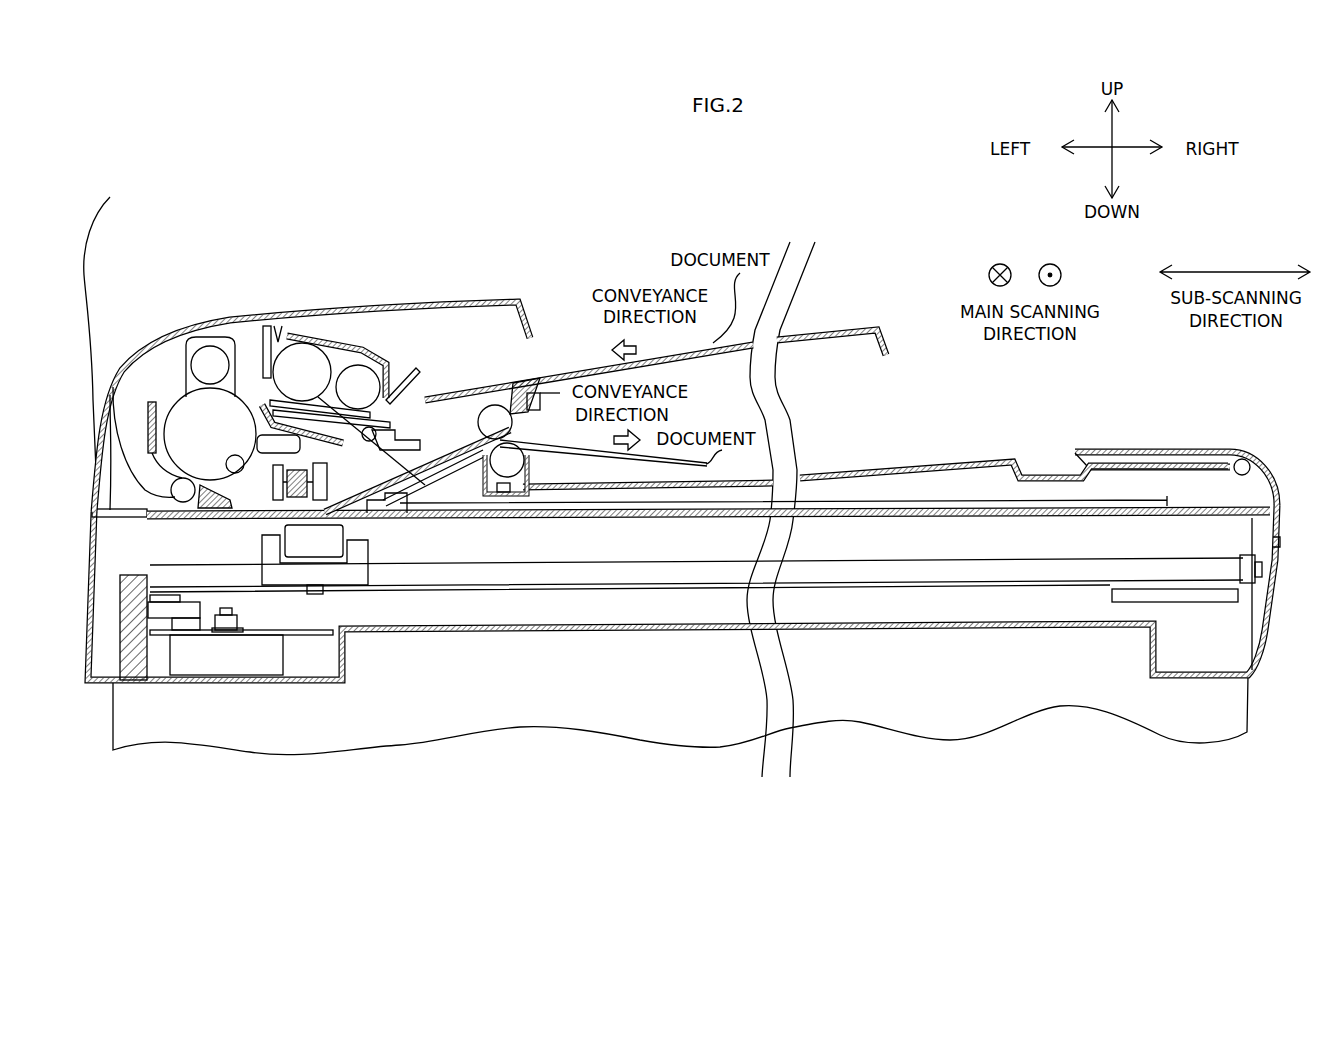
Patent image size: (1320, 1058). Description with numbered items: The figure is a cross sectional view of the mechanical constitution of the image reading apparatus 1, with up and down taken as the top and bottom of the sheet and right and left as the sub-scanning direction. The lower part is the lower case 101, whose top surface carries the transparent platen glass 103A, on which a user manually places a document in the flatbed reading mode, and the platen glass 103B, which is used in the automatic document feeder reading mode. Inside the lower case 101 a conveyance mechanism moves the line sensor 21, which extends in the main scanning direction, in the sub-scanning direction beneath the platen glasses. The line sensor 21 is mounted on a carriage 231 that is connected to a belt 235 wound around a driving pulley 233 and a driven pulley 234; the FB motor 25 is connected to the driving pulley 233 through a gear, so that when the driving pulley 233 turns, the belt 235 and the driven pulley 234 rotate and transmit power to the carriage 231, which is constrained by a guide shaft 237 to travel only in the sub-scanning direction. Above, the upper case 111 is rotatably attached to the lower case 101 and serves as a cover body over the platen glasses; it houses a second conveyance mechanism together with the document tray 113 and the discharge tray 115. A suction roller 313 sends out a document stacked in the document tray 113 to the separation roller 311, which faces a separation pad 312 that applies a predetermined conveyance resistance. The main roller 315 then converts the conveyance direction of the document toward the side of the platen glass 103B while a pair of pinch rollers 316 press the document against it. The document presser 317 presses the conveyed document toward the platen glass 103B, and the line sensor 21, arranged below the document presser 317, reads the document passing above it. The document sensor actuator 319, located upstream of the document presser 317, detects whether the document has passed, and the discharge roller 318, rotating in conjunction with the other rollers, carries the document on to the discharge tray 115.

The image reading apparatus 1 is at (716, 212).
The line sensor 21 is at (328, 543).
The FB motor 25 is at (233, 657).
The lower case 101 is at (86, 676).
The platen glass 103A is at (645, 518).
The platen glass 103B is at (135, 578).
The upper case 111 is at (1121, 451).
The document tray 113 is at (841, 330).
The discharge tray 115 is at (909, 460).
The carriage 231 is at (340, 573).
The driving pulley 233 is at (168, 610).
The driven pulley 234 is at (1130, 603).
The belt 235 is at (1067, 586).
The guide shaft 237 is at (960, 570).
The separation roller 311 is at (305, 360).
The separation pad 312 is at (428, 450).
The suction roller 313 is at (365, 378).
The main roller 315 is at (217, 410).
The pinch rollers 316 is at (208, 350).
The document presser 317 is at (402, 442).
The discharge roller 318 is at (435, 403).
The document sensor actuator 319 is at (267, 533).